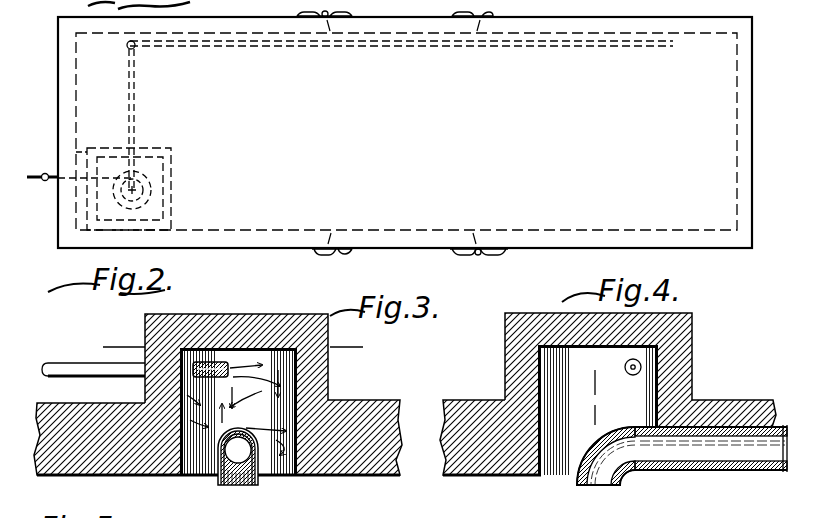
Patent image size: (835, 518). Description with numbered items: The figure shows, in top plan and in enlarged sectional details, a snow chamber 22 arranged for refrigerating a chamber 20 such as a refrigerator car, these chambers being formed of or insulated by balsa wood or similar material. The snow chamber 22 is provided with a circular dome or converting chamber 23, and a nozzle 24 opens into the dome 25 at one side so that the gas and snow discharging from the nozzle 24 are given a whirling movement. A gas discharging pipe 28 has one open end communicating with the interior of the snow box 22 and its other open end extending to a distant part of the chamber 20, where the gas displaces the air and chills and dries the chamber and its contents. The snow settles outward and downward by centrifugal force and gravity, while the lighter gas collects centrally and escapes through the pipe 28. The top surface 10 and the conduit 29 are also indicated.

In FIG. 3, the top surface 10 is at (122, 345).
In FIG. 2, the chamber 20 is at (405, 133).
In FIG. 2, the snow chamber 22 is at (172, 153).
In FIG. 3, the snow chamber 22 is at (80, 465).
In FIG. 4, the snow chamber 22 is at (458, 408).
In FIG. 2, the converting chamber 23 is at (172, 177).
In FIG. 3, the converting chamber 23 is at (313, 360).
In FIG. 4, the converting chamber 23 is at (507, 325).
In FIG. 2, the nozzle 24 is at (52, 181).
In FIG. 3, the nozzle 24 is at (78, 362).
In FIG. 4, the nozzle 24 is at (641, 367).
In FIG. 2, the dome 25 is at (165, 198).
In FIG. 3, the dome 25 is at (253, 350).
In FIG. 4, the dome 25 is at (562, 370).
In FIG. 2, the gas discharging pipe 28 is at (135, 105).
In FIG. 3, the gas discharging pipe 28 is at (263, 484).
In FIG. 4, the gas discharging pipe 28 is at (602, 482).
In FIG. 2, the conduit 29 is at (675, 46).